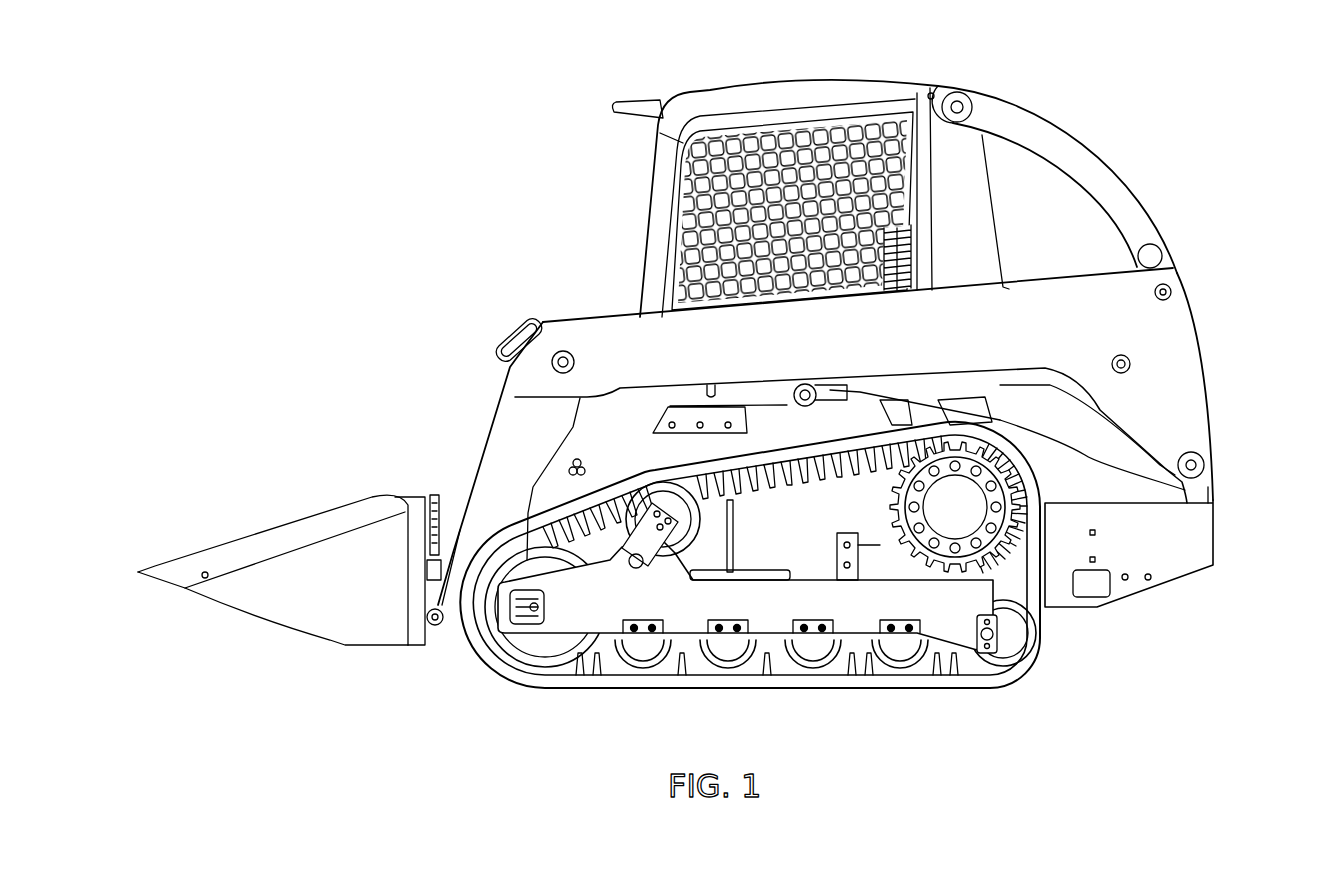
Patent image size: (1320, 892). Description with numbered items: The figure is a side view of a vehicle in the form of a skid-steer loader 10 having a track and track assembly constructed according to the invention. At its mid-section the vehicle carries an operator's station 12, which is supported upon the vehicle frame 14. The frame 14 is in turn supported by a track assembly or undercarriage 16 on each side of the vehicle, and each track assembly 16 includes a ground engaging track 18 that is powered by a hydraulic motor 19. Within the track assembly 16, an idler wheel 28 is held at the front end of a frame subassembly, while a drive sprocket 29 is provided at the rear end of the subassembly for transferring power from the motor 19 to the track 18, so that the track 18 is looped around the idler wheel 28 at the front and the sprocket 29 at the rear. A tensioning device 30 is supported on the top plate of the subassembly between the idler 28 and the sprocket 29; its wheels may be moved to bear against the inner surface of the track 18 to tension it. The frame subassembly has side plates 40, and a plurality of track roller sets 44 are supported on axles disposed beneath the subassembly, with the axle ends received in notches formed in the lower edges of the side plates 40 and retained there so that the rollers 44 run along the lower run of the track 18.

The skid-steer loader 10 is at (392, 222).
The operator's station 12 is at (803, 125).
The vehicle frame 14 is at (1200, 523).
The track assembly 16 is at (1062, 651).
The ground engaging track 18 is at (935, 688).
The hydraulic motor 19 is at (967, 521).
The idler wheel 28 is at (500, 663).
The drive sprocket 29 is at (890, 497).
The tensioning device 30 is at (748, 548).
The side plate 40 is at (872, 617).
The track roller sets 44 is at (635, 690).